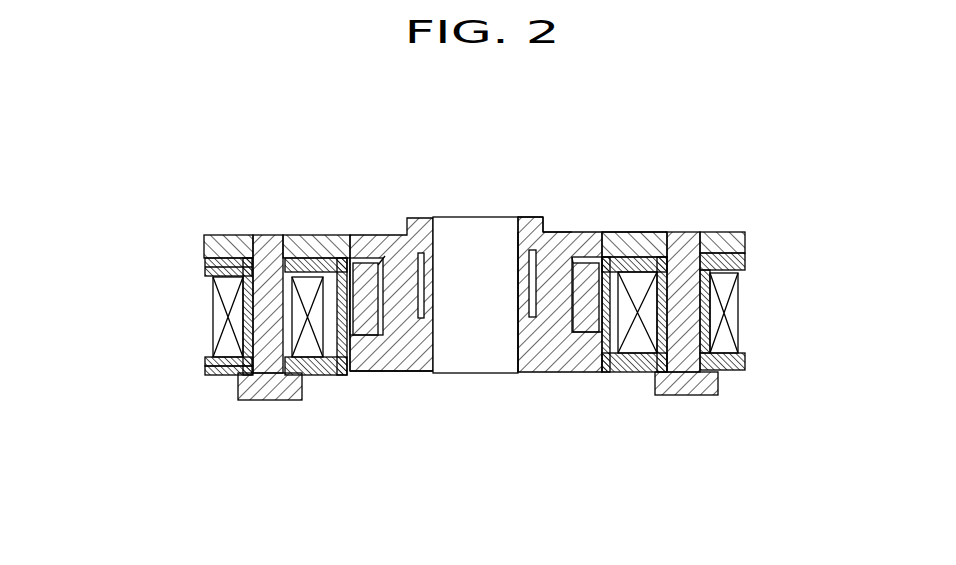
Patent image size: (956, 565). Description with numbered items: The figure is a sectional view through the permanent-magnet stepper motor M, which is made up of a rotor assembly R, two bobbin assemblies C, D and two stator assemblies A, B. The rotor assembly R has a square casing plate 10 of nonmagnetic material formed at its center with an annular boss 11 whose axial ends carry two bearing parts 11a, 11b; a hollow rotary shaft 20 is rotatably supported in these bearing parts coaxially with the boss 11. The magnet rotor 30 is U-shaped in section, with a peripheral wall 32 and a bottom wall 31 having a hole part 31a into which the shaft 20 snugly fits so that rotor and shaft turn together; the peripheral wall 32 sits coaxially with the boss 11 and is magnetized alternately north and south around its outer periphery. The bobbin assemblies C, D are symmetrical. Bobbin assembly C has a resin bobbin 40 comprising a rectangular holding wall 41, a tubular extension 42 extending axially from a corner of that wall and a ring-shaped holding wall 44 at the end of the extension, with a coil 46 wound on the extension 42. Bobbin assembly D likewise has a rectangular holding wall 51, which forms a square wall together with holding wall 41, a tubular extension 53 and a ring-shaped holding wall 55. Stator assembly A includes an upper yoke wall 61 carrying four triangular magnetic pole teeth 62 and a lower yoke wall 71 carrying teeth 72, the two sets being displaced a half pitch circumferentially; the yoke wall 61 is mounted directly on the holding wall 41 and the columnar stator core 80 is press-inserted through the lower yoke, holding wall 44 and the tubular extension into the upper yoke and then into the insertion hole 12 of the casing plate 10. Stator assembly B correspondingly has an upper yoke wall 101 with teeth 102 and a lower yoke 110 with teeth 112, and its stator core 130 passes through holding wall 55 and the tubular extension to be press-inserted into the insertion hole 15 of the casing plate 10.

The casing plate 10 is at (657, 230).
The annular boss 11 is at (573, 230).
The bearing part 11a is at (548, 228).
The bearing part 11b is at (537, 375).
The insertion hole 12 is at (242, 236).
The insertion hole 15 is at (693, 230).
The rotary shaft 20 is at (458, 237).
The magnet rotor 30 is at (393, 377).
The bottom wall 31 is at (567, 375).
The hole part 31a is at (430, 375).
The peripheral wall 32 is at (363, 235).
The bobbin 40 is at (197, 308).
The holding wall 41 is at (288, 235).
The tubular extension 42 is at (207, 275).
The ring-shaped holding wall 44 is at (207, 377).
The coil 46 is at (210, 340).
The holding wall 51 is at (668, 230).
The tubular extension 53 is at (712, 310).
The ring-shaped holding wall 55 is at (733, 320).
The yoke wall 61 is at (200, 258).
The magnetic pole teeth 62 is at (330, 235).
The yoke wall 71 is at (318, 380).
The magnetic pole teeth 72 is at (353, 373).
The stator core 80 is at (262, 378).
The yoke wall 101 is at (745, 257).
The magnetic pole teeth 102 is at (617, 232).
The lower yoke 110 is at (635, 377).
The magnetic pole teeth 112 is at (610, 375).
The stator core 130 is at (720, 392).
The stator assembly A is at (263, 408).
The stator assembly B is at (690, 403).
The bobbin assembly C is at (195, 322).
The bobbin assembly D is at (745, 312).
The stepper motor M is at (475, 472).
The rotor assembly R is at (642, 223).